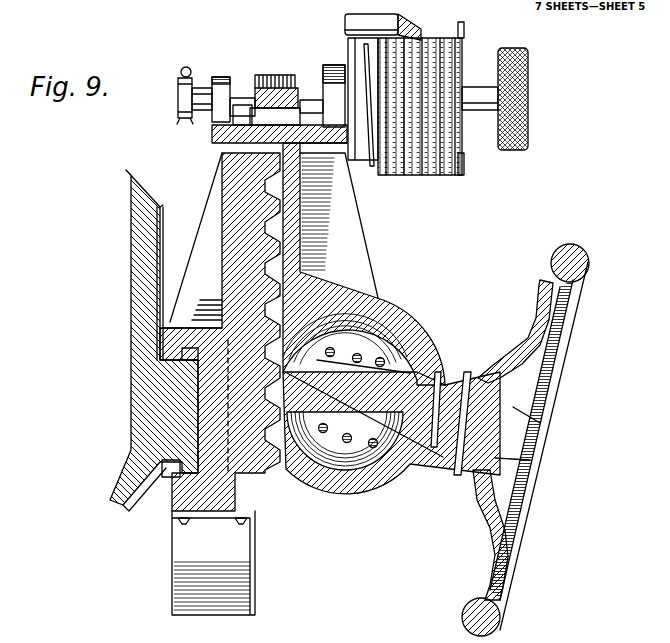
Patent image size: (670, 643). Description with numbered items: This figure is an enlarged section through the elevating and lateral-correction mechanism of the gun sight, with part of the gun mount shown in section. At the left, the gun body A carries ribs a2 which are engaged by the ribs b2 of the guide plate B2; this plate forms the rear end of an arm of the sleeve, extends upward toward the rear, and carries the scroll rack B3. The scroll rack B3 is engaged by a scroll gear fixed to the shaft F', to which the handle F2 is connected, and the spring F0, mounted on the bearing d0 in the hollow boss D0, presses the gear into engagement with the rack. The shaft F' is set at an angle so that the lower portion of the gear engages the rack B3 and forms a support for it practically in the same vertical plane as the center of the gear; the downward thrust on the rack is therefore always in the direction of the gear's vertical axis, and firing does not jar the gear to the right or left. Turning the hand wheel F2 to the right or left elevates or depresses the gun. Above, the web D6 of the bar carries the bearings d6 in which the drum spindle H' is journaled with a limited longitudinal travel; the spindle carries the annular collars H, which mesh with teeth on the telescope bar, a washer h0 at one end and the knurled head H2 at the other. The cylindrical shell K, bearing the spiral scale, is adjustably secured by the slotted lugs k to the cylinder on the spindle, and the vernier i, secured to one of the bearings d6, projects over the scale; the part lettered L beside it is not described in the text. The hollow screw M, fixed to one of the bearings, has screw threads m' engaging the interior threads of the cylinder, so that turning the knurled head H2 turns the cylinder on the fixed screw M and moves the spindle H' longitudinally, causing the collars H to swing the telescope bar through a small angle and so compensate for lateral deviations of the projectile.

The frame A is at (144, 337).
The guide plate B2 is at (163, 522).
The scroll rack B3 is at (277, 257).
The ribs of the gun body a2 is at (168, 457).
The ribs of the guide plate b2 is at (172, 353).
The web D6 is at (355, 243).
The hollow boss D0 is at (413, 333).
The bearing d0 is at (383, 333).
The spring F0 is at (360, 305).
The shaft F' is at (391, 430).
The handle F2 is at (512, 490).
The annular collars H is at (265, 84).
The drum spindle H' is at (342, 96).
The knurled head H2 is at (522, 91).
The bearings d6 is at (222, 78).
The washer h0 is at (178, 86).
The cylindrical shell K is at (443, 60).
The slotted lugs k is at (463, 33).
The cap L is at (371, 24).
The vernier i is at (412, 36).
The hollow screw M is at (365, 93).
The screw threads m' is at (374, 124).